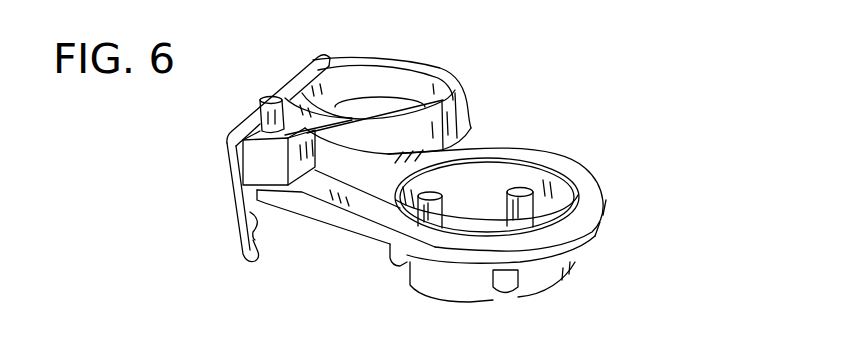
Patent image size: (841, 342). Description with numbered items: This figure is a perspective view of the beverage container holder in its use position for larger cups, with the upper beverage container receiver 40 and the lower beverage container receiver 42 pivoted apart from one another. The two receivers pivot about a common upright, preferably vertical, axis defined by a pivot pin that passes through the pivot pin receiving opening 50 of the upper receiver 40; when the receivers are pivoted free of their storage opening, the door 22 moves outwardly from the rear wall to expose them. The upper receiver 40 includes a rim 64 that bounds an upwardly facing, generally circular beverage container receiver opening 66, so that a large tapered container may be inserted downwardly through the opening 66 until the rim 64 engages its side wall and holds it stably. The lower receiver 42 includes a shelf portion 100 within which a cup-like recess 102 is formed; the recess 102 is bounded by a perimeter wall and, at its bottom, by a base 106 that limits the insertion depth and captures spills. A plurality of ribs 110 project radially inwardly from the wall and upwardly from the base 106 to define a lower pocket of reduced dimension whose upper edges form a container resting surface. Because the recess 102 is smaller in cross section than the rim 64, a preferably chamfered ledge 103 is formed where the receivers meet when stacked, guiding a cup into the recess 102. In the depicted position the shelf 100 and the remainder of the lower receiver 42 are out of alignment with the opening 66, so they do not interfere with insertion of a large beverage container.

The door 22 is at (258, 225).
The upper beverage container receiver 40 is at (416, 89).
The lower beverage container receiver 42 is at (612, 193).
The pivot pin receiving opening 50 is at (272, 96).
The rim 64 is at (397, 78).
The beverage container receiver opening 66 is at (358, 82).
The shelf portion 100 is at (506, 212).
The recess 102 is at (488, 212).
The ledge 103 is at (563, 182).
The base 106 is at (484, 220).
The ribs 110 is at (418, 187).